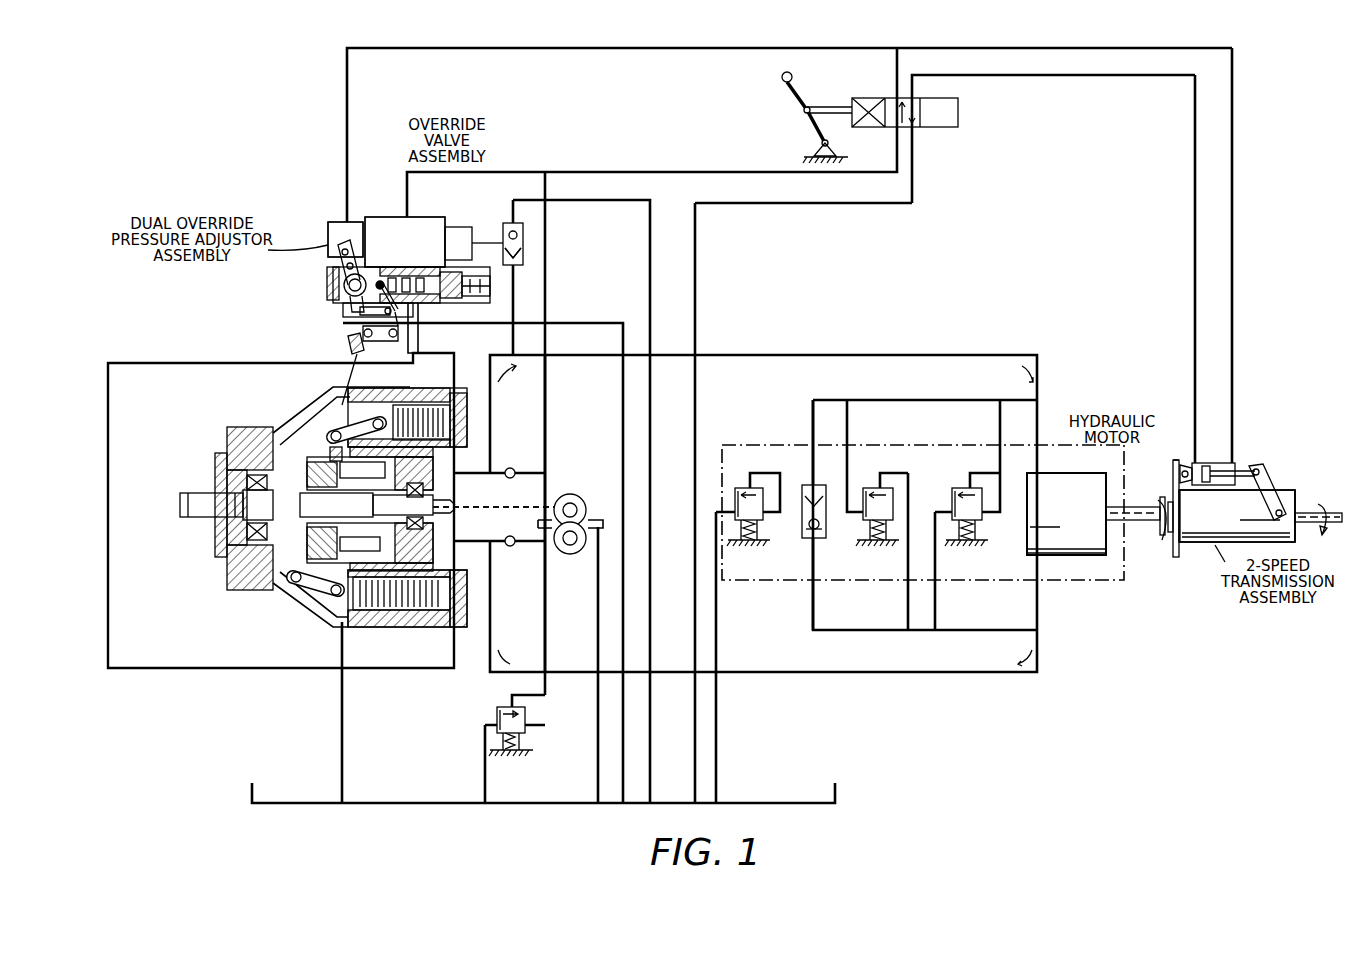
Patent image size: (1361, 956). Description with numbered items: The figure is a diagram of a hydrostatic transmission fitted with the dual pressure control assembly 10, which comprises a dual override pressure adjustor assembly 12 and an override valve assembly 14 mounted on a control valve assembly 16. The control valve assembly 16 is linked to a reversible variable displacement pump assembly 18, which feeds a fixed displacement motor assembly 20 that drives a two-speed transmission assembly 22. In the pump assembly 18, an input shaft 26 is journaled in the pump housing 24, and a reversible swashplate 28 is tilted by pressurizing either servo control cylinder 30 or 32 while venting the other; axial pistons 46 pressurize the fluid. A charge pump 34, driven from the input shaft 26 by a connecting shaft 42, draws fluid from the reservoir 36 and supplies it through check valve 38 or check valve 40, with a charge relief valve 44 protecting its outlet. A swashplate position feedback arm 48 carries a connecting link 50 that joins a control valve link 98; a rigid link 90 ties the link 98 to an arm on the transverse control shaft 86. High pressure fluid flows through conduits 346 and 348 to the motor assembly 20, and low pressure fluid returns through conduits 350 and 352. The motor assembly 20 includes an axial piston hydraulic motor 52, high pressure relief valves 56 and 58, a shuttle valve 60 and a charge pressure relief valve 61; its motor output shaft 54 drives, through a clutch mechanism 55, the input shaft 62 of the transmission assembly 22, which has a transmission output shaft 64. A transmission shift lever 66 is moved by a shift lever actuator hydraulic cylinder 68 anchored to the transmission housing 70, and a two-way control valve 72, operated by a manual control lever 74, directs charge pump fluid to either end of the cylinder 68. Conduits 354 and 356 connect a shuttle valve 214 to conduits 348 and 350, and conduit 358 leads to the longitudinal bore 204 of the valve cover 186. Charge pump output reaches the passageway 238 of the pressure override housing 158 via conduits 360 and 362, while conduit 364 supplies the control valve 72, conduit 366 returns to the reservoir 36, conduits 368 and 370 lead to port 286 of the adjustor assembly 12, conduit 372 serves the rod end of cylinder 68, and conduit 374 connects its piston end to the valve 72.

The dual pressure control assembly 10 is at (318, 214).
The dual override pressure adjustor assembly 12 is at (316, 226).
The override valve assembly 14 is at (370, 212).
The control valve assembly 16 is at (330, 274).
The reversible variable displacement pump assembly 18 is at (302, 390).
The fixed displacement motor assembly 20 is at (1052, 586).
The two-speed transmission assembly 22 is at (1292, 468).
The pump housing 24 is at (292, 605).
The input shaft 26 is at (195, 530).
The reversible swashplate 28 is at (300, 455).
The servo control cylinder 30 is at (440, 400).
The servo control cylinder 32 is at (435, 610).
The charge pump 34 is at (587, 515).
The reservoir 36 is at (845, 796).
The check valve 38 is at (513, 468).
The check valve 40 is at (514, 548).
The connecting shaft 42 is at (522, 503).
The charge relief valve 44 is at (498, 705).
The axial pistons 46 is at (333, 437).
The swashplate position feedback arm 48 is at (348, 345).
The connecting link 50 is at (380, 338).
The axial piston hydraulic motor 52 is at (1072, 482).
The motor output shaft 54 is at (1140, 525).
The clutch mechanism 55 is at (1160, 495).
The high pressure relief valve 56 is at (959, 485).
The high pressure relief valve 58 is at (870, 485).
The shuttle valve 60 is at (810, 475).
The charge pressure relief valve 61 is at (744, 485).
The input shaft 62 is at (1172, 540).
The transmission output shaft 64 is at (1332, 512).
The transmission shift lever 66 is at (1280, 493).
The shift lever actuator hydraulic cylinder 68 is at (1236, 466).
The transmission housing 70 is at (1195, 545).
The two-way control valve 72 is at (932, 128).
The manual control lever 74 is at (790, 90).
The transverse control shaft 86 is at (343, 286).
The rigid link 90 is at (343, 310).
The control valve link 98 is at (360, 320).
The pressure override housing 158 is at (418, 216).
The valve cover 186 is at (460, 226).
The longitudinal bore 204 is at (504, 262).
The shuttle valve 214 is at (508, 222).
The passageway 238 is at (400, 216).
The port 286 is at (340, 220).
The conduit 346 is at (450, 476).
The conduit 348 is at (822, 356).
The conduit 350 is at (865, 676).
The conduit 352 is at (450, 546).
The conduit 354 is at (514, 275).
The conduit 356 is at (650, 232).
The conduit 358 is at (486, 243).
The conduit 360 is at (546, 390).
The conduit 362 is at (515, 172).
The conduit 364 is at (660, 172).
The conduit 366 is at (792, 206).
The conduit 368 is at (895, 64).
The conduit 370 is at (566, 46).
The conduit 372 is at (1234, 137).
The conduit 374 is at (1193, 194).